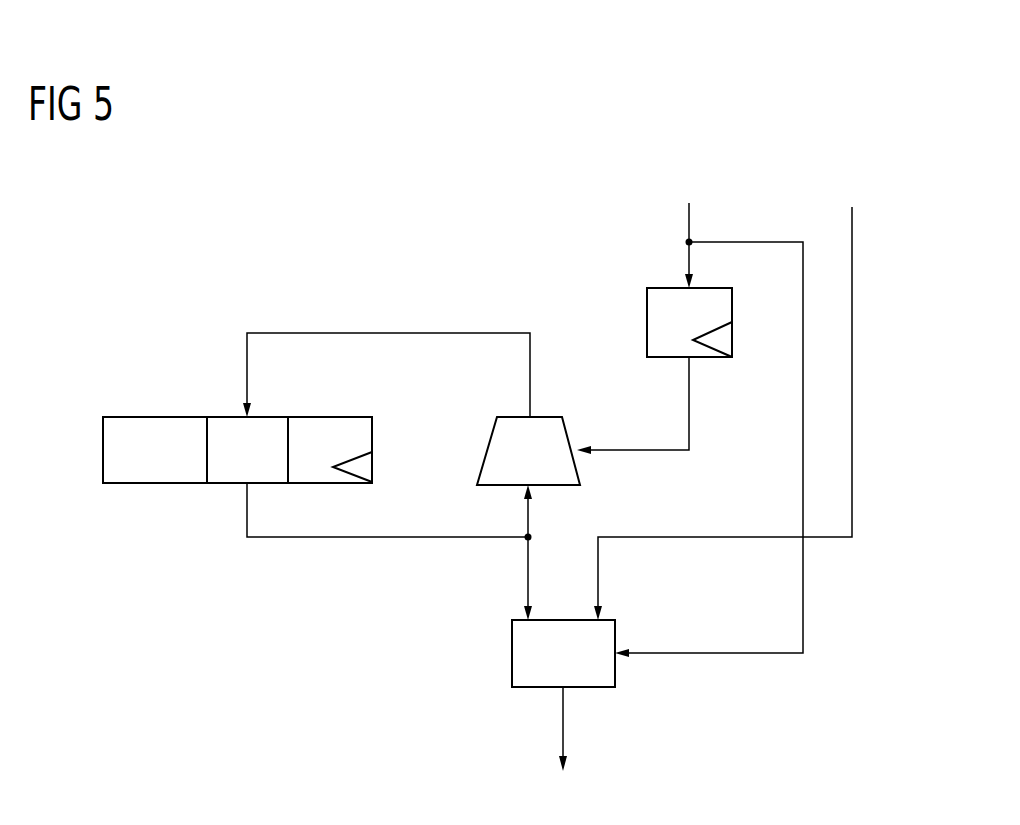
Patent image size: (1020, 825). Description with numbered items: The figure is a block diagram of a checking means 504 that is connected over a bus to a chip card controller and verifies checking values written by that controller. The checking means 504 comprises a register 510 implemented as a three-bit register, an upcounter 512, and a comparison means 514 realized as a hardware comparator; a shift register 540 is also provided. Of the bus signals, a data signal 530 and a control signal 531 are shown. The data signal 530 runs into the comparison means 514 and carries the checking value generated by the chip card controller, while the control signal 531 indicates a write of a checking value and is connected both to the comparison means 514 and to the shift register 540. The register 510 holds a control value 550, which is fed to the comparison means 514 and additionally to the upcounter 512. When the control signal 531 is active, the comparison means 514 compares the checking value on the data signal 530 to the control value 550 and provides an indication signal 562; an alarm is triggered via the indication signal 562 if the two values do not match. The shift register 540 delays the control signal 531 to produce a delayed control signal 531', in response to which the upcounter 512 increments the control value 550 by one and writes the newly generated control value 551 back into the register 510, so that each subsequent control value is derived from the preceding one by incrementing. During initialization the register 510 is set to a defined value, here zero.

The checking means 504 is at (170, 224).
The register 510 is at (103, 450).
The upcounter 512 is at (550, 417).
The comparison means 514 is at (512, 655).
The data signal 530 is at (852, 216).
The control signal 531 is at (709, 430).
The delayed control signal 531' is at (673, 405).
The shift register 540 is at (647, 312).
The control value 550 is at (528, 563).
The newly generated control value 551 is at (387, 333).
The indication signal 562 is at (563, 728).